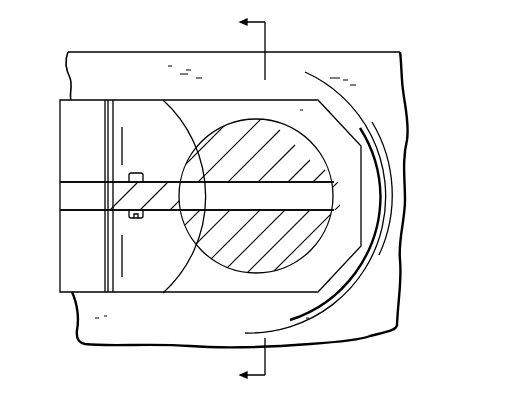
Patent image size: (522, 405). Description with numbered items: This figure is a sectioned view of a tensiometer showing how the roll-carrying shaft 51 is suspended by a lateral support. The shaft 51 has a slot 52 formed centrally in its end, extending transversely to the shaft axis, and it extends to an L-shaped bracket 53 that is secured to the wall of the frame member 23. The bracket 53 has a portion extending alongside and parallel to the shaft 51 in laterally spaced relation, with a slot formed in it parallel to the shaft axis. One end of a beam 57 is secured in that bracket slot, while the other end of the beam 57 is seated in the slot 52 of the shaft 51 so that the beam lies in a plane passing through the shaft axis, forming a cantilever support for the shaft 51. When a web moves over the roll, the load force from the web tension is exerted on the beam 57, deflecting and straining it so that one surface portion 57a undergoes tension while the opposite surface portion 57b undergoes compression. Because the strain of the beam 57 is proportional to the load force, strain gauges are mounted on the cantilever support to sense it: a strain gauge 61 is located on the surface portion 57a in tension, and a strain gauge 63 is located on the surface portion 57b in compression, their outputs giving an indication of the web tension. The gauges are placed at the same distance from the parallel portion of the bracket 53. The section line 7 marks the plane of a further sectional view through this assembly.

The section line 7- 7 is at (244, 199).
The frame member 23 is at (376, 60).
The shaft 51 is at (310, 137).
The slot 52 is at (244, 180).
The bracket 53 is at (146, 100).
The beam 57 is at (333, 197).
The surface portion 57a is at (178, 198).
The surface portion 57b is at (169, 212).
The strain gauge 61 is at (133, 173).
The strain gauge 63 is at (133, 218).